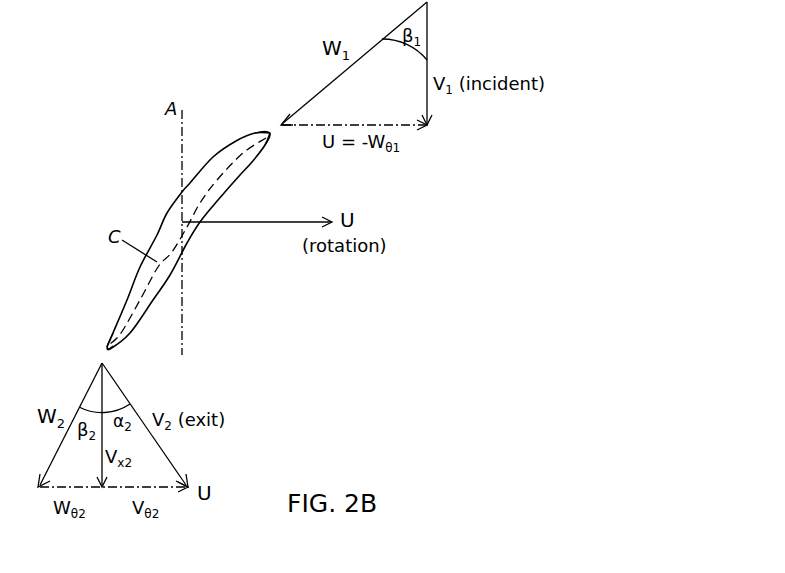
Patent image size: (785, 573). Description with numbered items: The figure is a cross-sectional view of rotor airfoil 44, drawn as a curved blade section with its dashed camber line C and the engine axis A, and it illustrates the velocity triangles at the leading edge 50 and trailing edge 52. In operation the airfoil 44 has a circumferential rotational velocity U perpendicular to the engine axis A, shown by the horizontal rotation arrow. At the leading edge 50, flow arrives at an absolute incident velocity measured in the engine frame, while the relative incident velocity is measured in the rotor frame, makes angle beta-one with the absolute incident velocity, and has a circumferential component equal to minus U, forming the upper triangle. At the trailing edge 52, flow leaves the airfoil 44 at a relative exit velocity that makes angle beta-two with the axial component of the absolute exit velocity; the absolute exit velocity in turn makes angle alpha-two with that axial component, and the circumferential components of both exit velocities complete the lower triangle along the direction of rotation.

The rotor airfoil 44 is at (162, 199).
The leading edge 50 is at (268, 132).
The trailing edge 52 is at (105, 343).